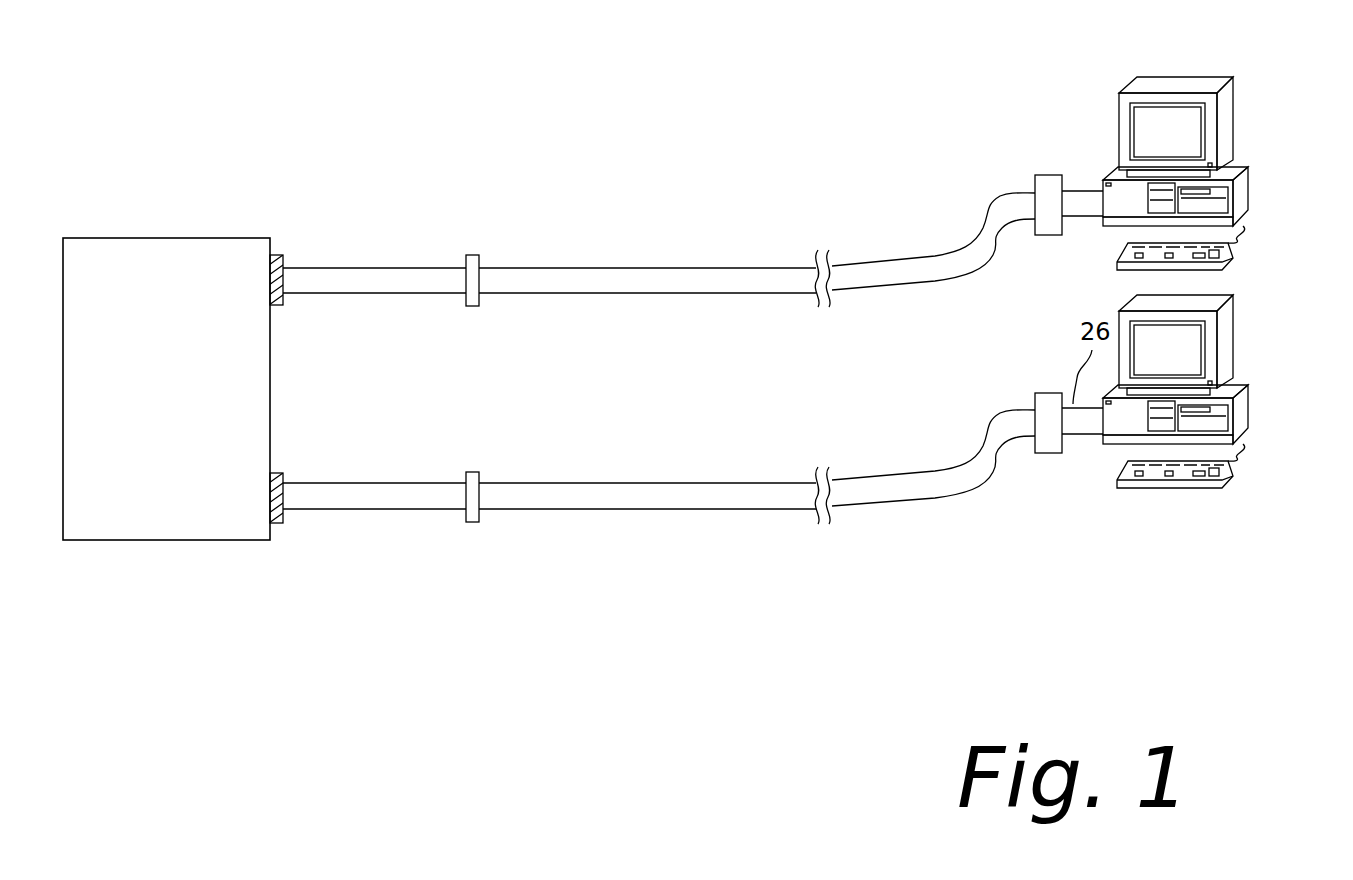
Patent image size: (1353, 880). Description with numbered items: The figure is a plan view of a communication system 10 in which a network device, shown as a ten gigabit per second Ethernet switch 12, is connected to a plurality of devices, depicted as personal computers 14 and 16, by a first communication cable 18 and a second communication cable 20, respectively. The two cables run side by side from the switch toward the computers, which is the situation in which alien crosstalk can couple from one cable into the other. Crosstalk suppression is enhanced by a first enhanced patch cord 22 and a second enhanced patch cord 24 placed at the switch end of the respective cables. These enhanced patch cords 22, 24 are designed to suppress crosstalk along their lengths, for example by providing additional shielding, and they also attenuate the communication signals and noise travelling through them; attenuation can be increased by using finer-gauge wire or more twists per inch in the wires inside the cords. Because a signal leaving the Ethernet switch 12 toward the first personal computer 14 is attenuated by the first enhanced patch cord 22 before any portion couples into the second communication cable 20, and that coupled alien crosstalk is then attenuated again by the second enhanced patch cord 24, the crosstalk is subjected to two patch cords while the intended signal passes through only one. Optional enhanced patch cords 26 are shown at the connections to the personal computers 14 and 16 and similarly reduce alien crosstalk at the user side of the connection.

The communication system 10 is at (583, 120).
The 10 Gb/s Ethernet switch 12 is at (108, 238).
The first personal computer 14 is at (1225, 105).
The second personal computer 16 is at (1228, 322).
The first communication cable 18 is at (721, 268).
The second communication cable 20 is at (751, 500).
The first enhanced patch cord 22 is at (339, 268).
The second enhanced patch cord 24 is at (369, 500).
The optional enhanced patch cords 26 is at (1073, 186).